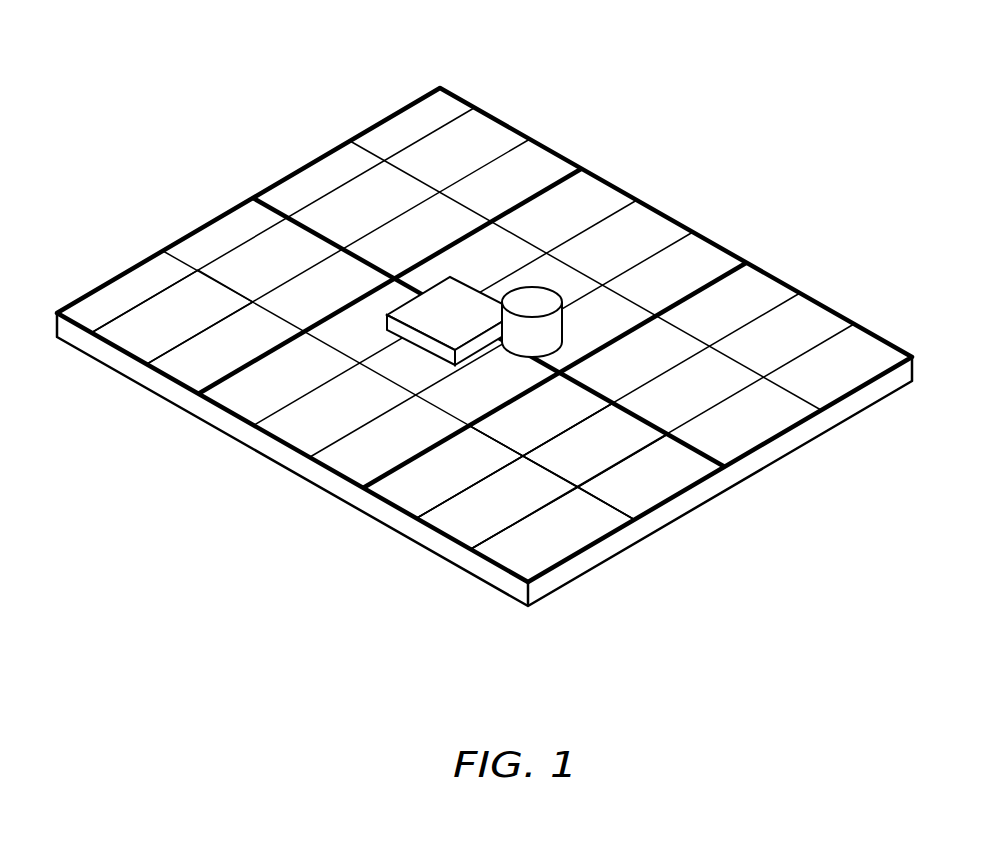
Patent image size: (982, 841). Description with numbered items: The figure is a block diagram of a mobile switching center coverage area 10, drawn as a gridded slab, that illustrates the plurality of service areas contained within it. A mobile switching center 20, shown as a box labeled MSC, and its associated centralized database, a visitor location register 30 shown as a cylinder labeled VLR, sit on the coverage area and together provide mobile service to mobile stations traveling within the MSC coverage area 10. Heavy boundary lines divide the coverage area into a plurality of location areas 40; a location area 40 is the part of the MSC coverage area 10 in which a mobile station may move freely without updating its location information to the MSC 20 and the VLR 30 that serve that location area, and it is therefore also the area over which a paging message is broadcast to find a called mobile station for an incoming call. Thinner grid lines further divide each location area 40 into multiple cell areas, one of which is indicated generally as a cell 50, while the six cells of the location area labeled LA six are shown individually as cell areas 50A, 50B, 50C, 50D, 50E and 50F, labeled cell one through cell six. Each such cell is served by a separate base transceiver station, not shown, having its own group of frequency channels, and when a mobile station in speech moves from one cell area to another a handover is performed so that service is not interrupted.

The MSC coverage area 10 is at (553, 152).
The mobile switching center (MSC) 20 is at (475, 306).
The visitor location register (VLR) 30 is at (533, 290).
The location area 40 is at (340, 138).
The cell area 50 is at (140, 342).
The cell area 50A is at (573, 390).
The cell area 50B is at (628, 432).
The cell area 50C is at (688, 453).
The cell area 50D is at (518, 563).
The cell area 50E is at (467, 528).
The cell area 50F is at (412, 503).